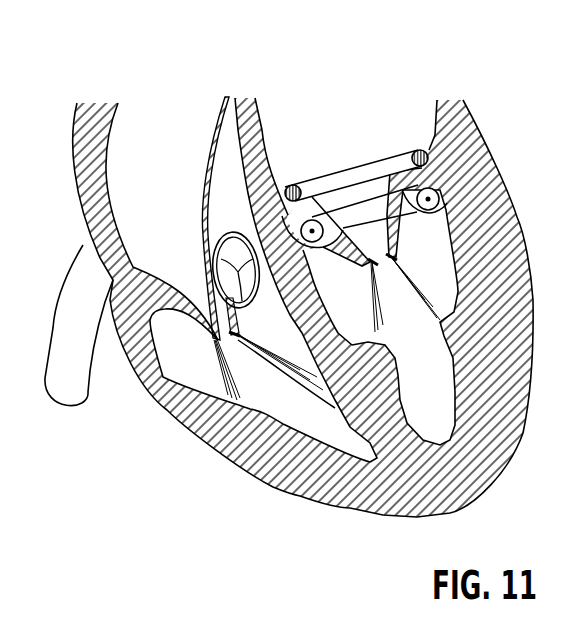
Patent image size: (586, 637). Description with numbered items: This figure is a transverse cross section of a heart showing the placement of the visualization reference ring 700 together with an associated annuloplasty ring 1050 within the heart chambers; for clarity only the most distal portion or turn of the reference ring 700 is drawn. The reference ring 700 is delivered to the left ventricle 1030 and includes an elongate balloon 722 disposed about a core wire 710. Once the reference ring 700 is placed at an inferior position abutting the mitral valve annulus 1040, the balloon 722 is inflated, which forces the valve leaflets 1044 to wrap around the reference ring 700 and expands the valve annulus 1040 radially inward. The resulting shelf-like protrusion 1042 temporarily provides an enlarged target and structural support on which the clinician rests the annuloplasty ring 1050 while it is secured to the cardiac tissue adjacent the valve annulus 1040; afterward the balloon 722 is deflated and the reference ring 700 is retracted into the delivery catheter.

The visualization reference ring 700 is at (351, 251).
The core wire 710 is at (436, 191).
The elongate balloon 722 is at (500, 208).
The left ventricle 1030 is at (352, 310).
The mitral valve annulus 1040 is at (280, 175).
The shelf-like protrusion 1042 is at (430, 166).
The valve leaflets 1044 is at (300, 235).
The annuloplasty ring 1050 is at (373, 163).